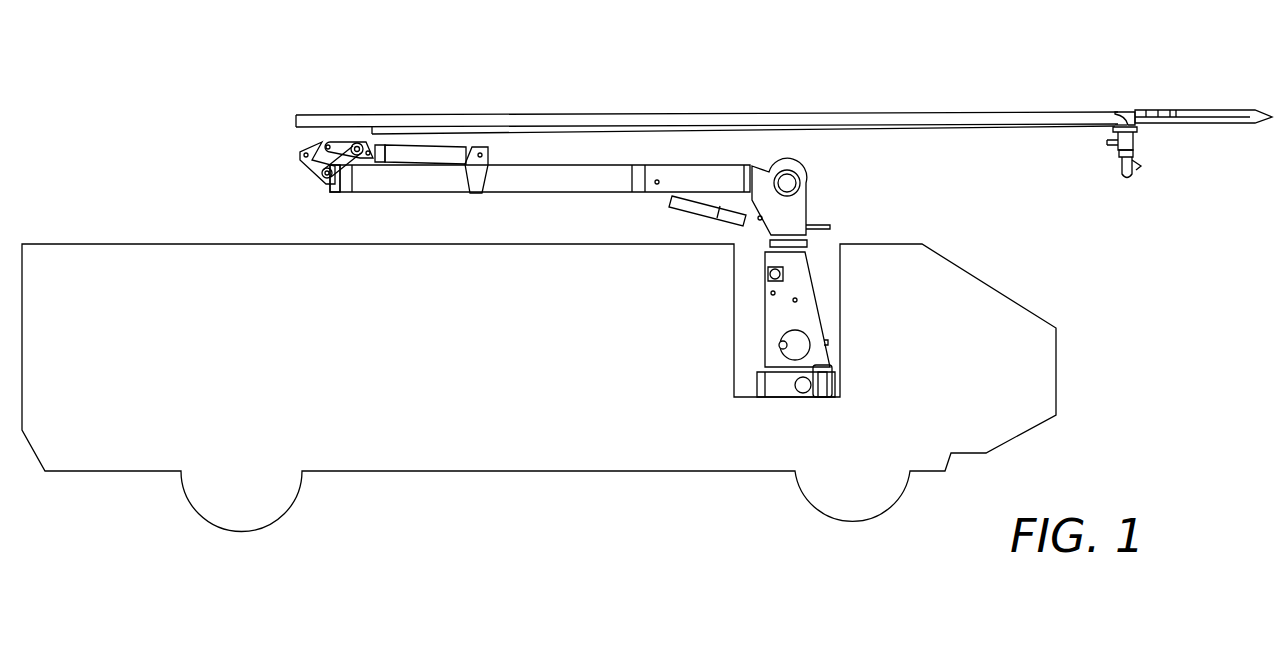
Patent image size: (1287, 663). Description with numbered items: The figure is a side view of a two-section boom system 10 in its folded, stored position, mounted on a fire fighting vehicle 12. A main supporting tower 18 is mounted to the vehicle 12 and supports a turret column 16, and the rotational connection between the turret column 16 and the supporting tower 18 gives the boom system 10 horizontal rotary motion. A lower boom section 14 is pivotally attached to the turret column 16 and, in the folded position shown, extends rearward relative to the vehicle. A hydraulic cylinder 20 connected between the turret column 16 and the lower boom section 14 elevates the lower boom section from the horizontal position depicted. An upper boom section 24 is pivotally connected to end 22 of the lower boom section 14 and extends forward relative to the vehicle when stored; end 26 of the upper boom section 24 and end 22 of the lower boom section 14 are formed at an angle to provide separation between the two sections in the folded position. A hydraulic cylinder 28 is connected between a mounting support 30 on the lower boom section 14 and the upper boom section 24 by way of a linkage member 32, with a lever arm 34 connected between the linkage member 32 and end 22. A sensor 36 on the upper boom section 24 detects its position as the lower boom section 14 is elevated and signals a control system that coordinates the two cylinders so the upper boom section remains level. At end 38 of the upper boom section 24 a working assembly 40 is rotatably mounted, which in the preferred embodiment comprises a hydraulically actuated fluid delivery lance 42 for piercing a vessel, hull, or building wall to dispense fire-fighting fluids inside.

The two-section boom system 10 is at (612, 94).
The fire fighting vehicle 12 is at (148, 243).
The lower boom section 14 is at (575, 167).
The turret column 16 is at (806, 195).
The main supporting tower 18 is at (832, 305).
The hydraulic cylinder 20 is at (718, 205).
The end of lower boom section 22 is at (303, 165).
The upper boom section 24 is at (707, 113).
The end of upper boom section 26 is at (340, 134).
The hydraulic cylinder 28 is at (447, 150).
The mounting support 30 is at (484, 164).
The linkage member 32 is at (357, 135).
The lever arm 34 is at (352, 165).
The sensor 36 is at (997, 112).
The end of upper boom section 38 is at (1127, 108).
The working assembly 40 is at (1213, 110).
The hydraulically actuated fluid delivery lance 42 is at (1226, 130).